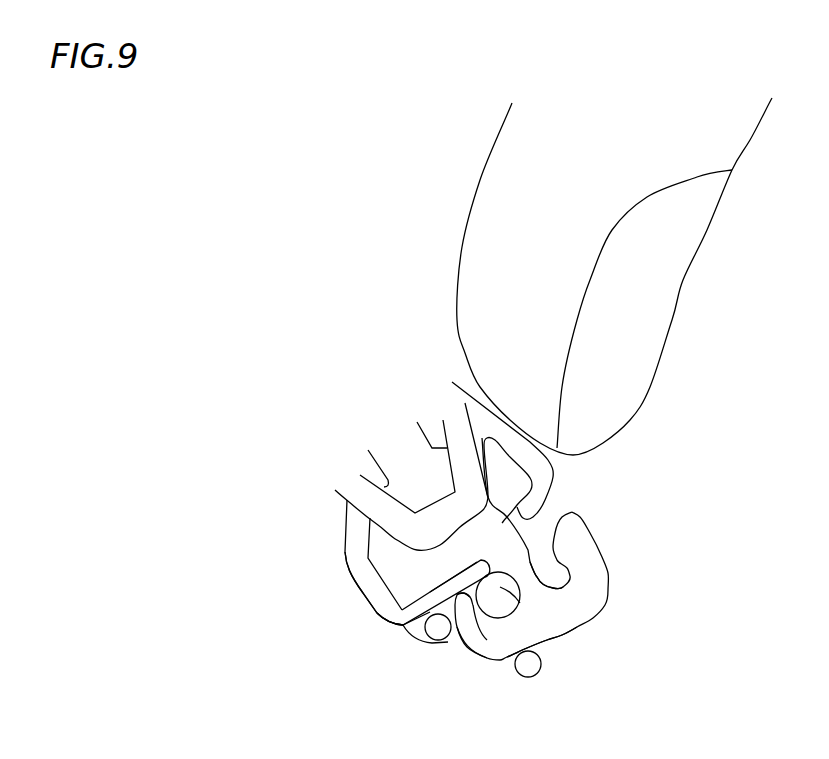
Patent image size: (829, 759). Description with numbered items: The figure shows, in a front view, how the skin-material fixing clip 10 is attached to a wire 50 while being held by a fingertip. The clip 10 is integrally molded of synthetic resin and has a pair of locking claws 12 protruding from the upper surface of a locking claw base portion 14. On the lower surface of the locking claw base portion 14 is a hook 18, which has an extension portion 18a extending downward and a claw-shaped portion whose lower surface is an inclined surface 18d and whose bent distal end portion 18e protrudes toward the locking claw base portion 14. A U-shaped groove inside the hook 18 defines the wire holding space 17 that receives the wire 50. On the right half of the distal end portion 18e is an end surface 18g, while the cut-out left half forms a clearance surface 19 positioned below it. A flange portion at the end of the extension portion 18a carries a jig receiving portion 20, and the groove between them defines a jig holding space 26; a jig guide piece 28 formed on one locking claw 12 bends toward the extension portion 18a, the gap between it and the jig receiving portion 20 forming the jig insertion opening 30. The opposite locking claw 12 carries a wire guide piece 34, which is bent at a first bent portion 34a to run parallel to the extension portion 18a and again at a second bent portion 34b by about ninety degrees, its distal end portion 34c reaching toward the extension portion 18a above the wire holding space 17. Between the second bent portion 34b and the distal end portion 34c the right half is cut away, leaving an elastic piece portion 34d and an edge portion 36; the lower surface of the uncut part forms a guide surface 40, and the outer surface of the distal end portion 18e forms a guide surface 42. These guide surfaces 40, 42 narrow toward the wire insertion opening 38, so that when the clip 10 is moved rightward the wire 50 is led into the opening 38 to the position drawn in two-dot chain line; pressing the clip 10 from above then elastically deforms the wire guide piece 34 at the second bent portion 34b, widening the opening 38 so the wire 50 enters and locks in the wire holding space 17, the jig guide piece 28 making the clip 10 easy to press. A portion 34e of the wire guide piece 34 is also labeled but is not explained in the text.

The skin-material fixing clip 10 is at (377, 435).
The locking claw 12 is at (372, 503).
The locking claw base portion 14 is at (435, 532).
The wire holding space 17 is at (500, 600).
The hook 18 is at (608, 588).
The extension portion 18a is at (498, 525).
The inclined surface 18d is at (537, 613).
The distal end portion 18e is at (463, 617).
The end surface 18g is at (528, 615).
The clearance surface 19 is at (472, 613).
The jig receiving portion 20 is at (572, 537).
The jig holding space 26 is at (573, 572).
The jig guide piece 28 is at (522, 445).
The jig insertion opening 30 is at (555, 507).
The wire guide piece 34 is at (372, 592).
The first bent portion 34a is at (350, 562).
The second bent portion 34b is at (377, 618).
The distal end portion 34c is at (500, 578).
The elastic piece portion 34d is at (420, 598).
The outer face of arm 34e is at (352, 573).
The edge portion 36 is at (382, 632).
The wire insertion opening 38 is at (447, 642).
The guide surface 40 is at (420, 618).
The guide surface 42 is at (462, 610).
The wire 50 is at (433, 637).